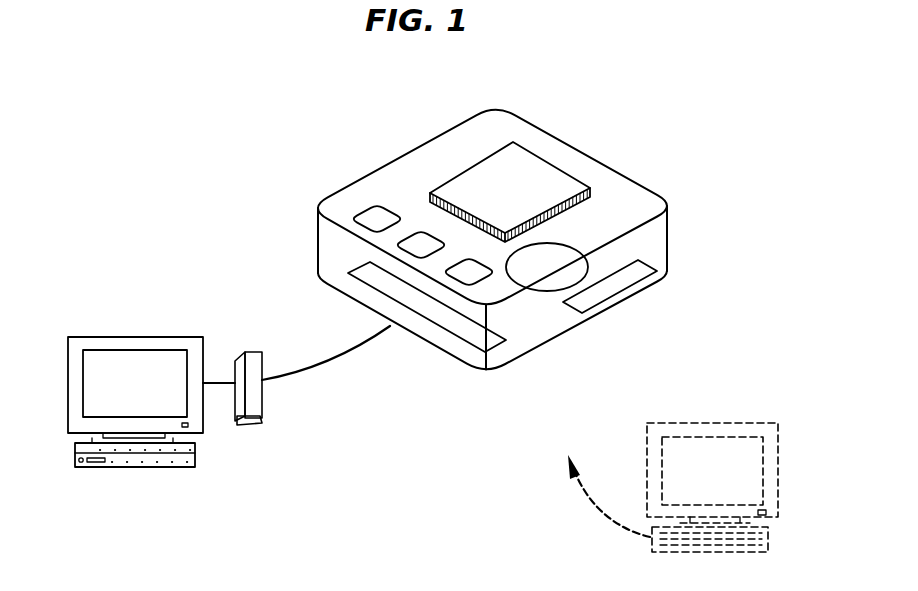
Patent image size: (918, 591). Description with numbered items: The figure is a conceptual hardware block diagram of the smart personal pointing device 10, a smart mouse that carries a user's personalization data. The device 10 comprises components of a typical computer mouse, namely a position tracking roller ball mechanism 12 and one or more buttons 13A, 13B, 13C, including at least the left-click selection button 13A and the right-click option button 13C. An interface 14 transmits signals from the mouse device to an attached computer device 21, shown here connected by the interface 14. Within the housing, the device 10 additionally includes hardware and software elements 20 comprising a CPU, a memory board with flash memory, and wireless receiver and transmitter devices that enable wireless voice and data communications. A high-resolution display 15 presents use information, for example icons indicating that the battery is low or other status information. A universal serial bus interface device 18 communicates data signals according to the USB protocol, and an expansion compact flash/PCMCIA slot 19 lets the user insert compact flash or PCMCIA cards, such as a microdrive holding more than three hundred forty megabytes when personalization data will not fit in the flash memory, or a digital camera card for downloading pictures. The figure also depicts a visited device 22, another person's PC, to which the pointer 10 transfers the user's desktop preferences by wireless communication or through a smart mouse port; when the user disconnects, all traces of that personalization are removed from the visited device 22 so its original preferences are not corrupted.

The smart personal pointing device 10 is at (624, 144).
The position tracking roller ball mechanism 12 is at (545, 291).
The left-click selection button 13A is at (357, 215).
The button 13B is at (396, 249).
The right-click option button 13C is at (457, 284).
The interface 14 is at (312, 368).
The high-resolution display 15 is at (532, 167).
The universal serial bus (USB) interface device 18 is at (622, 294).
The compact flash/PCMCIA slot 19 is at (468, 341).
The hardware and software elements 20 is at (478, 152).
The attached computer device 21 is at (99, 337).
The visited device 22 is at (744, 421).